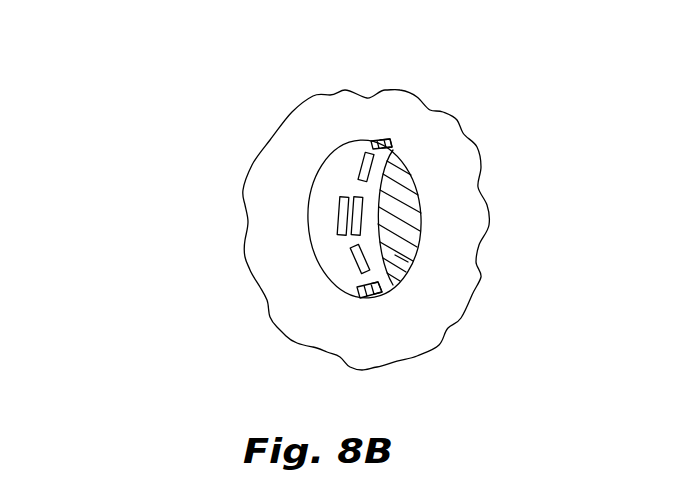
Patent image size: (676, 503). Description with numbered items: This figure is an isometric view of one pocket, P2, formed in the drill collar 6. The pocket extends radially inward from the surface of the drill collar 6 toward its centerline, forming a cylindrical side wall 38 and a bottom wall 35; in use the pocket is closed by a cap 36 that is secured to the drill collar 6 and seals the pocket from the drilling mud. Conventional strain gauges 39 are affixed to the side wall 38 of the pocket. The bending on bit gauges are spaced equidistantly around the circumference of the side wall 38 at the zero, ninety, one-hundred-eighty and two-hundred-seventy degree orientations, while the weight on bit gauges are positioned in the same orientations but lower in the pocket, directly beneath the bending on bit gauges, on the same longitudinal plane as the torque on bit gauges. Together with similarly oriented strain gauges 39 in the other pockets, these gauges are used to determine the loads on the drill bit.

The drill collar 6 is at (431, 126).
The cylindrical side wall 38 is at (373, 138).
The cap 36 is at (398, 159).
The strain gauges 39 is at (405, 242).
The bottom wall 35 is at (396, 268).